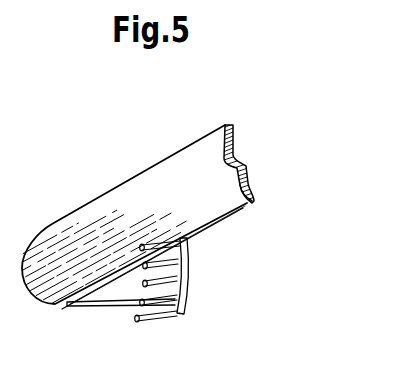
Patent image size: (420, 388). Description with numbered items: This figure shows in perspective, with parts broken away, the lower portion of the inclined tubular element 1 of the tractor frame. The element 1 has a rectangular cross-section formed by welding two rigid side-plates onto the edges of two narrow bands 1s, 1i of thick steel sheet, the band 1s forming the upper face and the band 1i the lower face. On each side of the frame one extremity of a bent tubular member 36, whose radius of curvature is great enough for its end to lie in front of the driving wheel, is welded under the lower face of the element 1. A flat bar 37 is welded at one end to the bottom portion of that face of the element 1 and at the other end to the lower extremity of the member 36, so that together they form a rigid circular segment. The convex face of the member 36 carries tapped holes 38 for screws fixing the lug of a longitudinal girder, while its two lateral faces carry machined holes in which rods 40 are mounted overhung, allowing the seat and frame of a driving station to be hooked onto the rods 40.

The tubular element 1 is at (170, 162).
The narrow band 1s is at (228, 124).
The narrow band 1i is at (243, 209).
The bent tubular member 36 is at (190, 248).
The flat bar 37 is at (87, 308).
The tapped holes 38 is at (190, 272).
The rods 40 is at (142, 321).